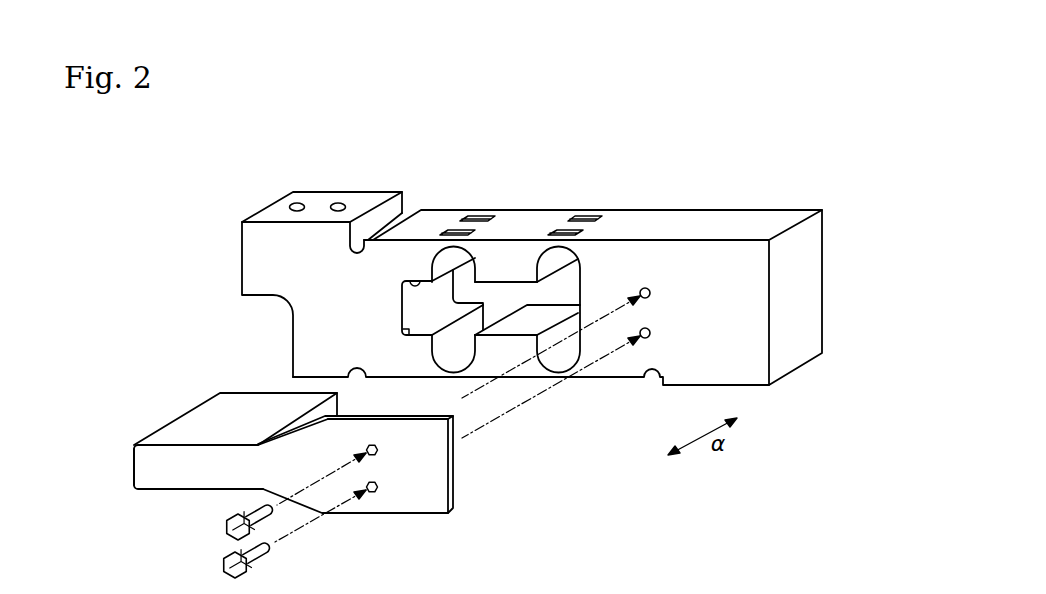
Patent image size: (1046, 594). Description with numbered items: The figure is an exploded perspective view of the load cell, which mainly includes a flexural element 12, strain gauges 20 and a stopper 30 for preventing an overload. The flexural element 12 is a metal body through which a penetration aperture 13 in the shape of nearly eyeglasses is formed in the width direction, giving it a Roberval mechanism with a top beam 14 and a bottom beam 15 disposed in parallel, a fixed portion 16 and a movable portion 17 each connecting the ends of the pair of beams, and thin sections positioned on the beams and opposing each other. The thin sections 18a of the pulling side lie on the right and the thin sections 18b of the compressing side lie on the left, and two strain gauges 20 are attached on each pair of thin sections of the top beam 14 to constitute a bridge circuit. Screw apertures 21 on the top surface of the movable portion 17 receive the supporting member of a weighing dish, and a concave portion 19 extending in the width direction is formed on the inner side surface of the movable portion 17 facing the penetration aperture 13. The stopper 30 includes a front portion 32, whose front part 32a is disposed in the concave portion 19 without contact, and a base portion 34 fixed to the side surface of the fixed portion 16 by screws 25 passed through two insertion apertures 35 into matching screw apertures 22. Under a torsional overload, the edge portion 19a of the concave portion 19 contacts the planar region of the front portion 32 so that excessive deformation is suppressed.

The flexural element 12 is at (233, 267).
The penetration aperture 13 is at (552, 297).
The top beam 14 is at (514, 262).
The bottom beam 15 is at (506, 355).
The fixed portion 16 is at (744, 295).
The movable portion 17 is at (345, 288).
The thin sections of the pulling side 18a is at (553, 293).
The thin sections of the compressing side 18b is at (453, 266).
The concave portion 19 is at (407, 312).
The edge portion 19a is at (413, 282).
The strain gauge 20 is at (470, 229).
The screw aperture 21 is at (344, 203).
The screw aperture 22 is at (645, 339).
The screw 25 is at (226, 535).
The stopper 30 is at (178, 404).
The front portion 32 is at (237, 427).
The front part 32a is at (132, 466).
The base portion 34 is at (417, 497).
The insertion aperture 35 is at (372, 497).